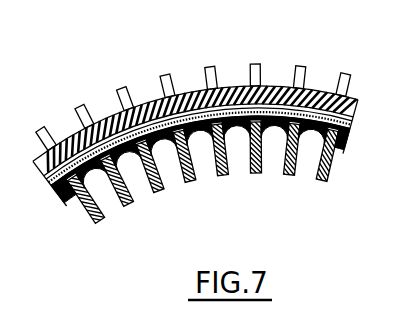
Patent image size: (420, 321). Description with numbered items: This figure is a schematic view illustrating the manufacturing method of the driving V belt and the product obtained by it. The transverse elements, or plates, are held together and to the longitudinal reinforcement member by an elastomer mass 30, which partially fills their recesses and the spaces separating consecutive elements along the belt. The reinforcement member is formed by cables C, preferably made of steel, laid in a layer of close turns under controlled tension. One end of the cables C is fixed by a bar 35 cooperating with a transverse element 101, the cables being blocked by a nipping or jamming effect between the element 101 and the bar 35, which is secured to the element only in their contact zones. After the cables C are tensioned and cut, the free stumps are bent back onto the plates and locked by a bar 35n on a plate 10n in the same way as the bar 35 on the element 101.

The elastomer mass 30 is at (180, 93).
The bar 35 is at (287, 88).
The bar 35n is at (70, 140).
The plate 10n is at (97, 222).
The transverse element 101 is at (290, 176).
The cables C is at (347, 127).